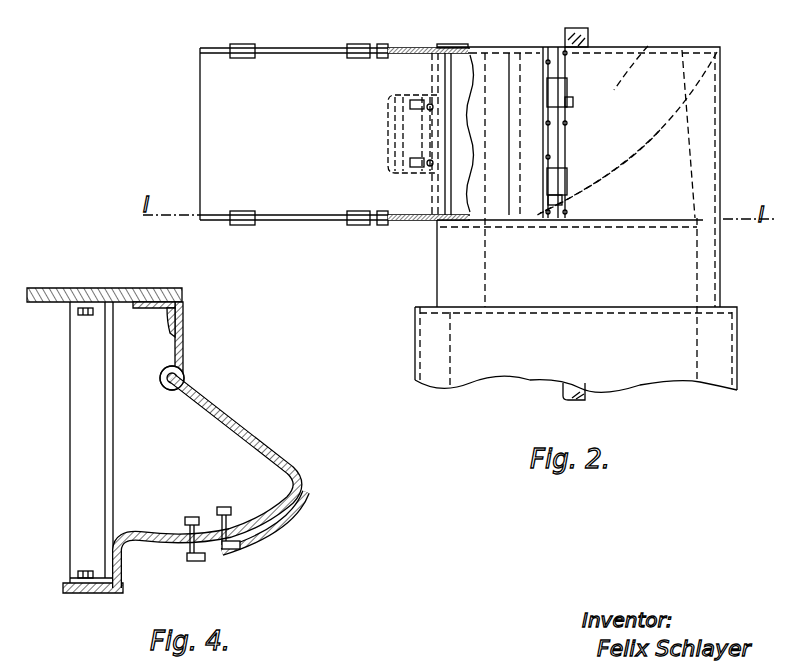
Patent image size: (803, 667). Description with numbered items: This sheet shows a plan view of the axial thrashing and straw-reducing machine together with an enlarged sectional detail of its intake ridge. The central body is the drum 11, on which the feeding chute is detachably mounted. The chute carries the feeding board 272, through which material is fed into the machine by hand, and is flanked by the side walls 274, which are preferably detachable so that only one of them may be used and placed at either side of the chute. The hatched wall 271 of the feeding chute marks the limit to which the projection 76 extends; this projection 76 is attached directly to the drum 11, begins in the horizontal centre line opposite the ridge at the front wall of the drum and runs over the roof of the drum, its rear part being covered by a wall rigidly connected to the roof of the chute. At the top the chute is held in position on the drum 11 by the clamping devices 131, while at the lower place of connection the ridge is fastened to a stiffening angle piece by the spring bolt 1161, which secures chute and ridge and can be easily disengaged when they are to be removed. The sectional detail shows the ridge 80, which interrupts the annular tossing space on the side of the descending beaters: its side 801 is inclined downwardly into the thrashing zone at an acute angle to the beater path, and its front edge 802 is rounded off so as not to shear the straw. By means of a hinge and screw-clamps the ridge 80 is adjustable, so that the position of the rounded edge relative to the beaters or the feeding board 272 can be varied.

In FIG. 2, the feeding board 272 is at (213, 125).
In FIG. 2, the side walls 274 is at (307, 48).
In FIG. 2, the wall of the feeding chute 271 is at (400, 221).
In FIG. 2, the ridge 80 is at (457, 72).
In FIG. 4, the ridge 80 is at (297, 478).
In FIG. 4, the side of the ridge 801 is at (238, 414).
In FIG. 4, the front edge of the ridge 802 is at (308, 501).
In FIG. 2, the projection 76 is at (643, 46).
In FIG. 2, the clamping devices 131 is at (558, 88).
In FIG. 2, the spring bolt 1161 is at (393, 151).
In FIG. 2, the drum 11 is at (706, 283).